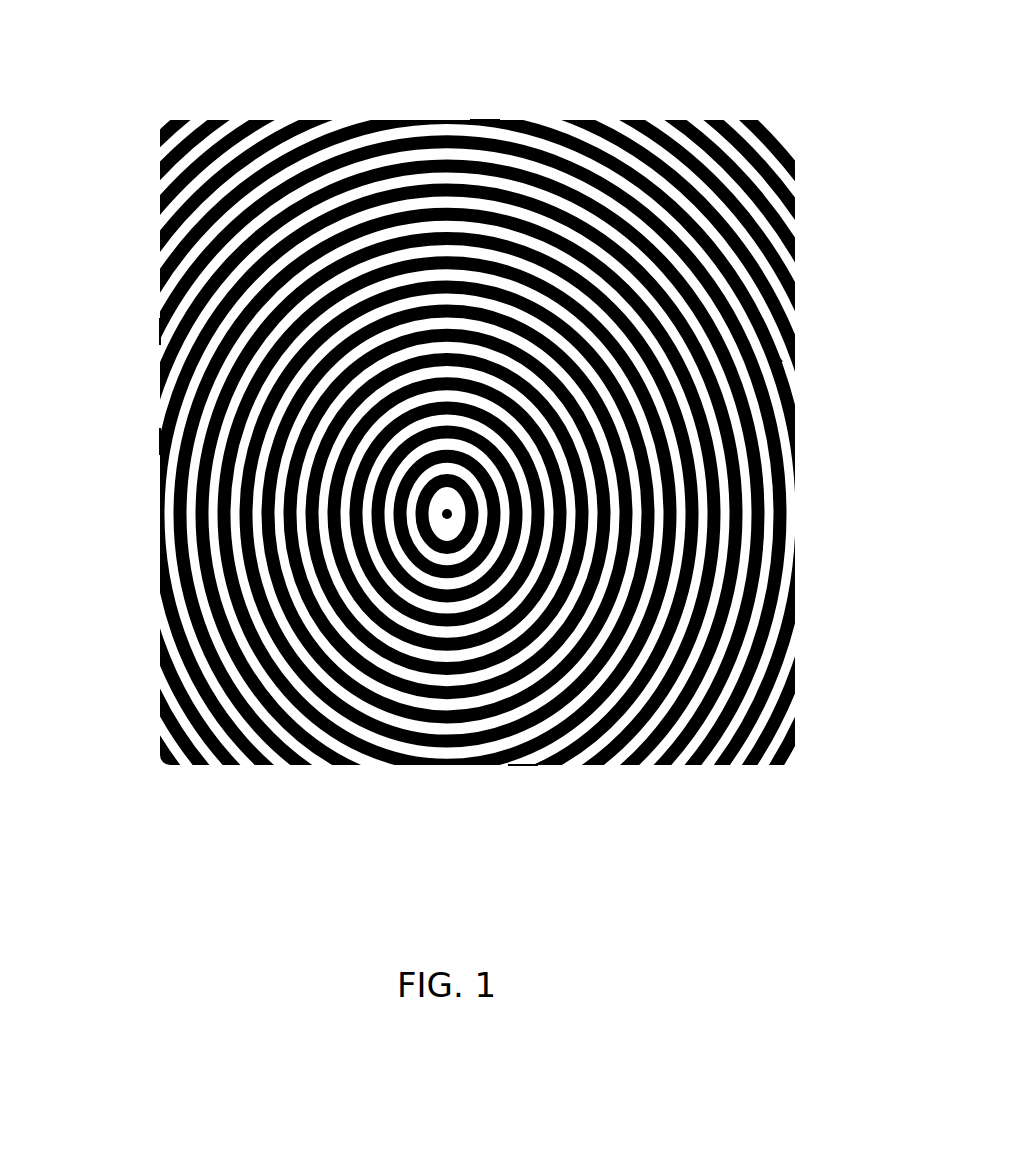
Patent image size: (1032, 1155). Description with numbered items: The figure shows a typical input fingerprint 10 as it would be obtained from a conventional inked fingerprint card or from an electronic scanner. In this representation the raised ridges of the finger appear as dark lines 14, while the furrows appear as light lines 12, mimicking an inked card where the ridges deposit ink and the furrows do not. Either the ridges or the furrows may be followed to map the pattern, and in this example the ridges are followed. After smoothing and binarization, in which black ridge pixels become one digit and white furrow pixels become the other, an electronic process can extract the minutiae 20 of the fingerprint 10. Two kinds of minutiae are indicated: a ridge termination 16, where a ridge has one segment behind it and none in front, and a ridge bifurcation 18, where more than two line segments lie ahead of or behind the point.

The fingerprint 10 is at (820, 249).
The light lines 12 is at (160, 330).
The dark lines 14 is at (158, 440).
The ridge termination 16 is at (485, 120).
The ridge bifurcation 18 is at (773, 346).
The minutiae 20 is at (522, 765).